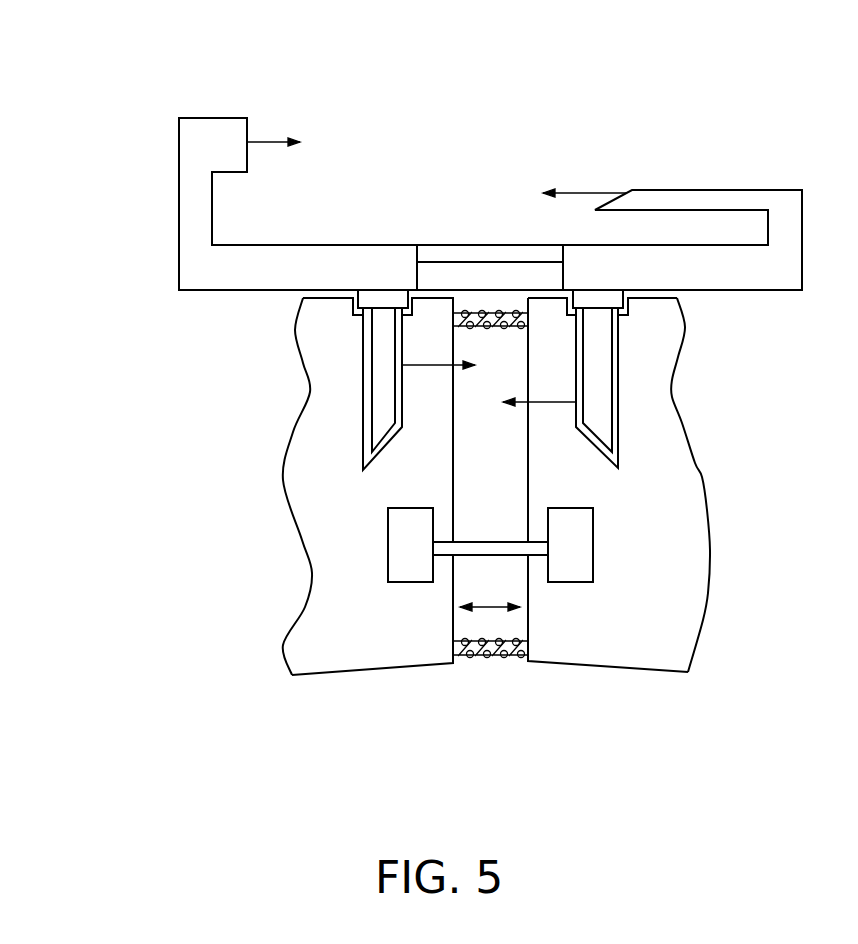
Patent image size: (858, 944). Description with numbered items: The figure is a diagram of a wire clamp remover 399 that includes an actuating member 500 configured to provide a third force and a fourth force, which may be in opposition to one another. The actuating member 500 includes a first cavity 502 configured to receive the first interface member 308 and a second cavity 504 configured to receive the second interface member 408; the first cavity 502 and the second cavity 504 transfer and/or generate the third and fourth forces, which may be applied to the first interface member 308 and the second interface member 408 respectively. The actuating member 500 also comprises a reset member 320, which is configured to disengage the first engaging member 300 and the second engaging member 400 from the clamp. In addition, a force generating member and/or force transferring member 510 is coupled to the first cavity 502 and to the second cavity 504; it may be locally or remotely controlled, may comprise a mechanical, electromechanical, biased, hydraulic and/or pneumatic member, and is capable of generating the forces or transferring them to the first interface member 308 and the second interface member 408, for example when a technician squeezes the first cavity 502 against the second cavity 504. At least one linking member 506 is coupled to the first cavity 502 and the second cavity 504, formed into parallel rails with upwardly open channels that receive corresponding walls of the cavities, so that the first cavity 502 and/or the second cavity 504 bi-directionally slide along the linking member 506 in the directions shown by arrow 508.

The first engaging member 300 is at (215, 117).
The wire clamp remover 399 is at (528, 72).
The second engaging member 400 is at (718, 172).
The first interface member 308 is at (384, 447).
The second interface member 408 is at (613, 433).
The reset member 320 is at (483, 467).
The linking member 506 is at (502, 310).
The actuating member 500 is at (469, 491).
The first cavity 502 is at (282, 648).
The second cavity 504 is at (708, 607).
The arrow 508 is at (511, 596).
The force generating member and/or force transferring member 510 is at (405, 582).